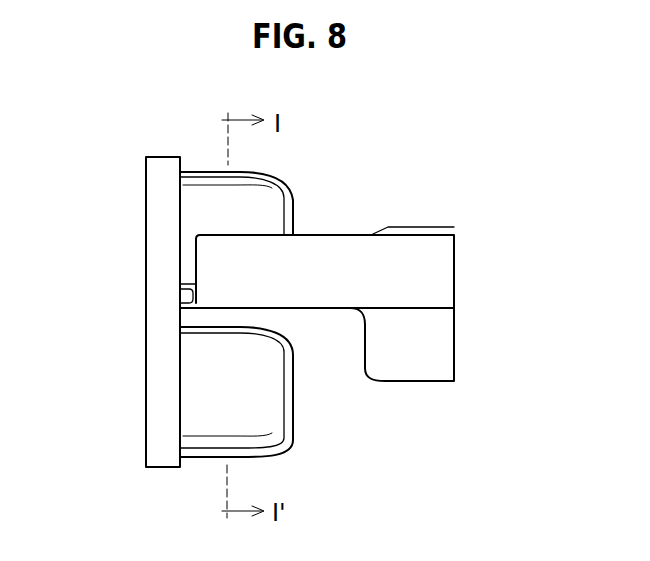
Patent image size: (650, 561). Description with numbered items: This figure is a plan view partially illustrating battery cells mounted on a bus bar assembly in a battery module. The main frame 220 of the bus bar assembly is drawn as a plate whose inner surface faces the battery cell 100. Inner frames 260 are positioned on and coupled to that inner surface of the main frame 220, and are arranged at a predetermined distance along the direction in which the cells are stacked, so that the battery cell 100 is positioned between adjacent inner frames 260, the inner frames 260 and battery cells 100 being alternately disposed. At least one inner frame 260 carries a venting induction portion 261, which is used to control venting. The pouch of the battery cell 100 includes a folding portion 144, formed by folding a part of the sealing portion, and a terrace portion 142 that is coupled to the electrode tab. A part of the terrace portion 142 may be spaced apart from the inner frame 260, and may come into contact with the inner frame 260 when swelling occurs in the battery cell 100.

The main frame 220 is at (150, 265).
The folding portion 144 is at (446, 268).
The battery cell 100 is at (447, 342).
The terrace portion 142 is at (375, 350).
The venting induction portion 261 is at (293, 447).
The inner frame 260 is at (301, 428).